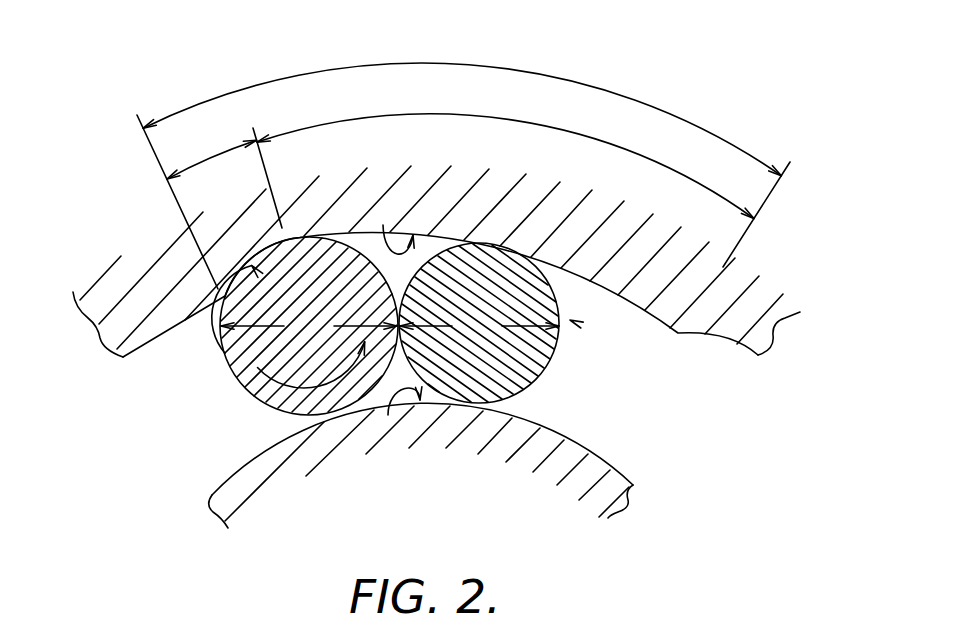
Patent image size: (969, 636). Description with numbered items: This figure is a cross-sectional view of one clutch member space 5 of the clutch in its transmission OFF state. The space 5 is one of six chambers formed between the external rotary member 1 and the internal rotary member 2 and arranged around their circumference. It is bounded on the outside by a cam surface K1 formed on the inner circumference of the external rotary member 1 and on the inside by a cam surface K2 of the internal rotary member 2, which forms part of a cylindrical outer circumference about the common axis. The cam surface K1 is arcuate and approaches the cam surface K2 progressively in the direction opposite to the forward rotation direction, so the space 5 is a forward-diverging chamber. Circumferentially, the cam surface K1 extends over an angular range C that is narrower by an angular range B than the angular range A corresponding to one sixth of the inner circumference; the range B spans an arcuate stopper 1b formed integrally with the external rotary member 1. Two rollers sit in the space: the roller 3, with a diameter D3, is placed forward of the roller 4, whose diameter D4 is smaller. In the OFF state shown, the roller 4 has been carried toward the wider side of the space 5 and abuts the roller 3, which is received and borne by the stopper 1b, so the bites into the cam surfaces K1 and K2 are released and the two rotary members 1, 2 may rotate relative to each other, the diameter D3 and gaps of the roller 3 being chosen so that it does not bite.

The external rotary member 1 is at (131, 347).
The arcuate stopper 1b is at (226, 354).
The internal rotary member 2 is at (215, 492).
The roller 3 is at (258, 372).
The roller 4 is at (522, 383).
The clutch member space 5 is at (570, 320).
The cam surface K1 is at (383, 225).
The cam surface K2 is at (388, 415).
The diameter of roller 3 D3 is at (309, 325).
The diameter of roller 4 D4 is at (479, 325).
The angular range A is at (463, 162).
The angular range B is at (212, 151).
The angular range C is at (503, 160).